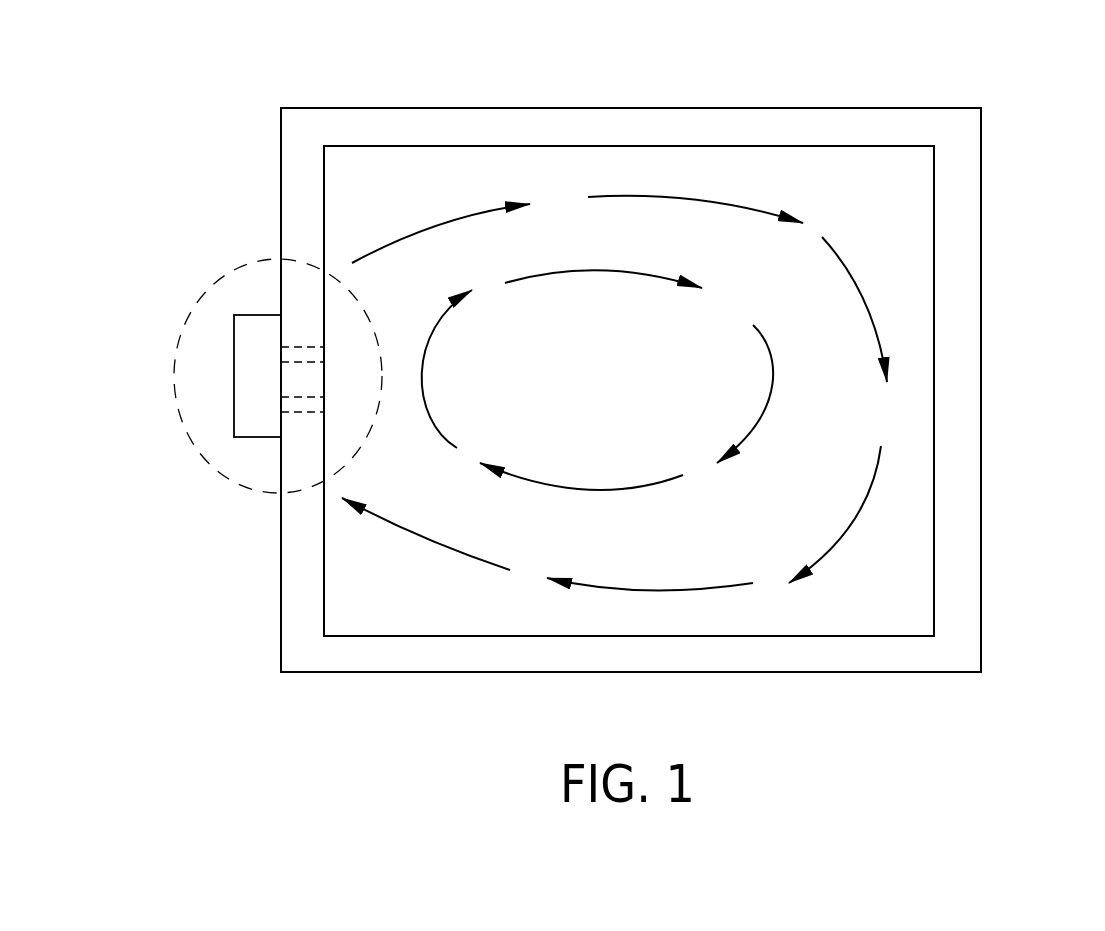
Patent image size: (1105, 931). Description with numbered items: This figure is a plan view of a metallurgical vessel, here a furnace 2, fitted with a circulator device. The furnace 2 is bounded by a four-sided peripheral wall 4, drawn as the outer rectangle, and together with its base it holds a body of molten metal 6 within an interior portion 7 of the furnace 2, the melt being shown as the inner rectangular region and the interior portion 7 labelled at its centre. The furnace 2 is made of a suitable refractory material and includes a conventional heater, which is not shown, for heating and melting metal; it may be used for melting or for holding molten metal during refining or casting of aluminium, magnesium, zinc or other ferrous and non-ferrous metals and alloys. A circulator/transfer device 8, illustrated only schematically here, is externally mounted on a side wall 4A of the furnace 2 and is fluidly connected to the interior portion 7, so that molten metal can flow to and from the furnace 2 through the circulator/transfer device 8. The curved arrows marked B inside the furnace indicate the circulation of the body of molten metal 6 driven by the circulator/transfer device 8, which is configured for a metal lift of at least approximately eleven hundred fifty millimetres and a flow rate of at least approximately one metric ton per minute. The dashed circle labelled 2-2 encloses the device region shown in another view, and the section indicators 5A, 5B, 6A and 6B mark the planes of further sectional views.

The furnace 2 is at (812, 97).
The peripheral wall 4 is at (583, 122).
The side wall 4A is at (300, 600).
The body of molten metal 6 is at (917, 230).
The interior portion 7 is at (596, 387).
The circulator/transfer device 8 is at (235, 367).
The flow arrows B is at (857, 287).
The section line 2-2 is at (237, 265).
The section line 5A is at (328, 654).
The section line 5B is at (247, 352).
The section line 6A is at (304, 128).
The section line 6B is at (233, 185).